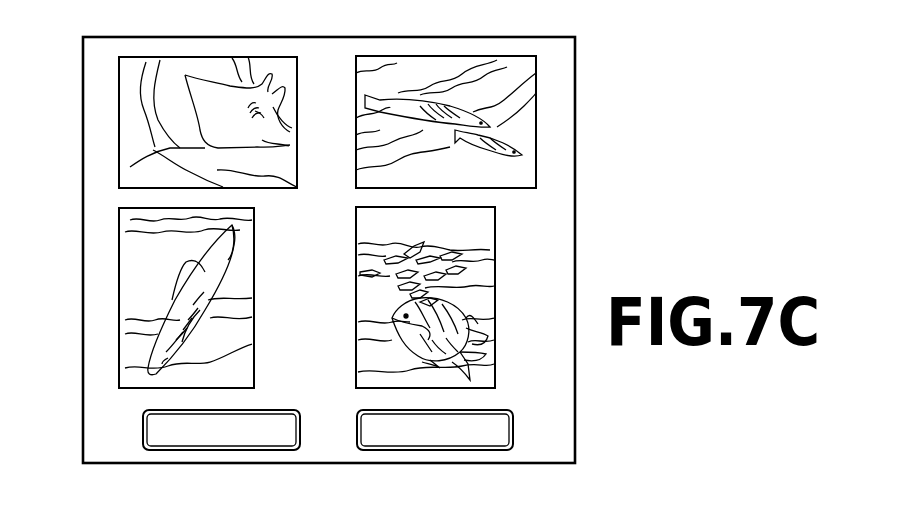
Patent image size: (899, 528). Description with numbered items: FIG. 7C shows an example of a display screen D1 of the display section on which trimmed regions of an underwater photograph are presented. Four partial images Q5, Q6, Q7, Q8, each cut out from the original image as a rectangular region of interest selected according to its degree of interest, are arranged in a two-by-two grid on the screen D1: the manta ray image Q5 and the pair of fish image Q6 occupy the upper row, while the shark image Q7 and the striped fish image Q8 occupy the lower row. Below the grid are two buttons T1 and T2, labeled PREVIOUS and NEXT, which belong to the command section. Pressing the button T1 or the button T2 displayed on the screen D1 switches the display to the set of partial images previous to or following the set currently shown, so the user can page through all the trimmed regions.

The screen D1 is at (575, 125).
The partial image Q5 is at (119, 93).
The partial image Q6 is at (536, 163).
The partial image Q7 is at (119, 256).
The partial image Q8 is at (495, 226).
The command button T1 is at (242, 452).
The command button T2 is at (455, 452).